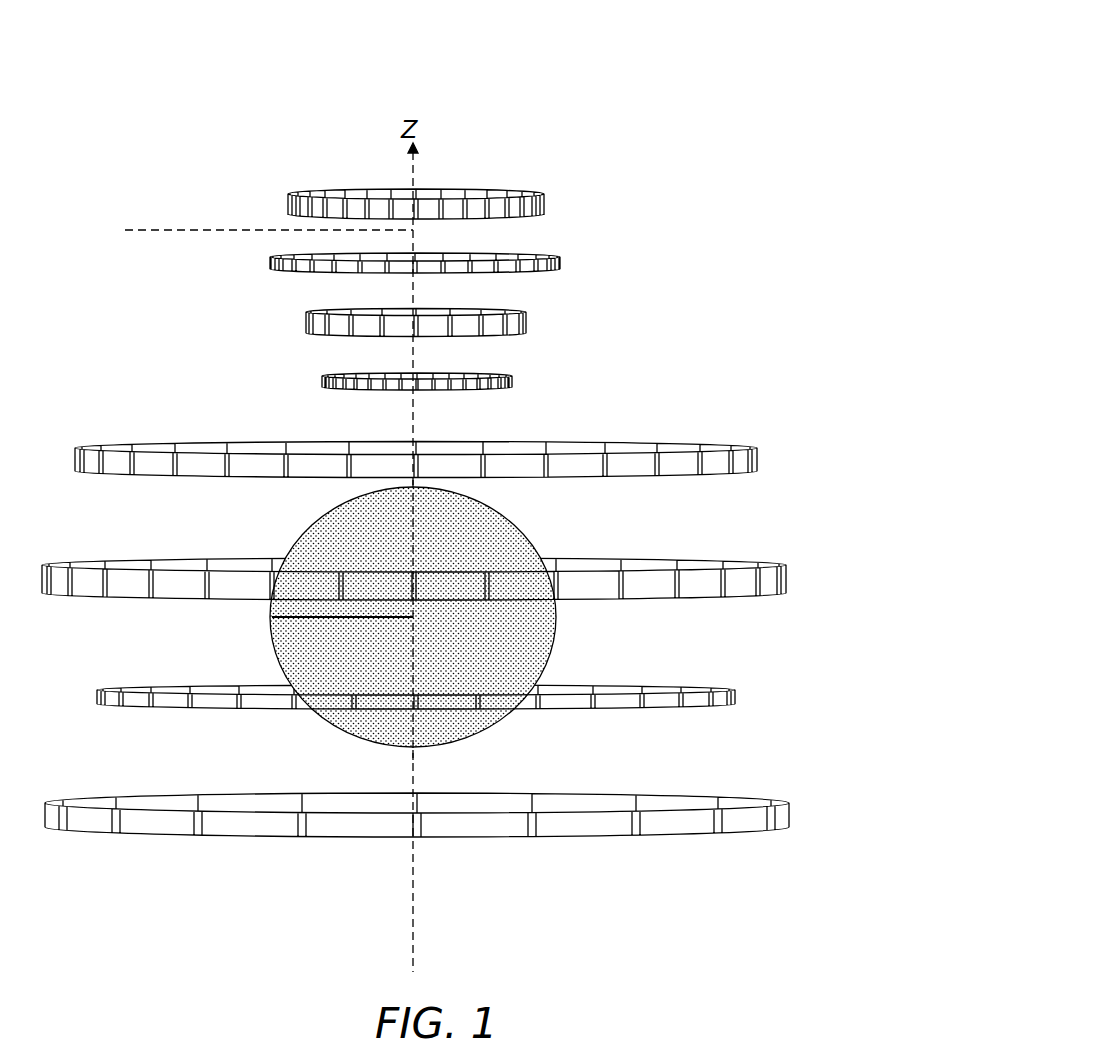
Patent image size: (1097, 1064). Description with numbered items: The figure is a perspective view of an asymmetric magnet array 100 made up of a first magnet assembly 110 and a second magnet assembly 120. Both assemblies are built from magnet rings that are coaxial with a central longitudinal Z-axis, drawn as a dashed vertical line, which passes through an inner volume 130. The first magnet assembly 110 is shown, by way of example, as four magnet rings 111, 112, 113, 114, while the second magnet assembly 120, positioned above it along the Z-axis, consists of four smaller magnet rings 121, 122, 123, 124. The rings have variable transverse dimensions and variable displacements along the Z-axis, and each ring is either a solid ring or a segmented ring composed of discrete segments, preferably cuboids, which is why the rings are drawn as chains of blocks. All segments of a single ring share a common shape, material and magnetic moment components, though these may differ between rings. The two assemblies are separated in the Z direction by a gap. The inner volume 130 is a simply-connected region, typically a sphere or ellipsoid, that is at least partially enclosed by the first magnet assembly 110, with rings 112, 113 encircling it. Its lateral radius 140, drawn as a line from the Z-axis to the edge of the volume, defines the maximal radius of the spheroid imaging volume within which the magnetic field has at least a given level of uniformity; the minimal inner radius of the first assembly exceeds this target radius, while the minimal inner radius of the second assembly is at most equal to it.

The asymmetric magnet array 100 is at (572, 137).
The first magnet assembly 110 is at (833, 440).
The magnet ring 111 is at (759, 458).
The magnet ring 112 is at (451, 631).
The magnet ring 113 is at (455, 631).
The magnet ring 114 is at (824, 806).
The second magnet assembly 120 is at (708, 161).
The magnet ring 121 is at (513, 382).
The magnet ring 122 is at (528, 321).
The magnet ring 123 is at (561, 262).
The magnet ring 124 is at (546, 199).
The inner volume 130 is at (346, 733).
The lateral radius 140 is at (272, 640).